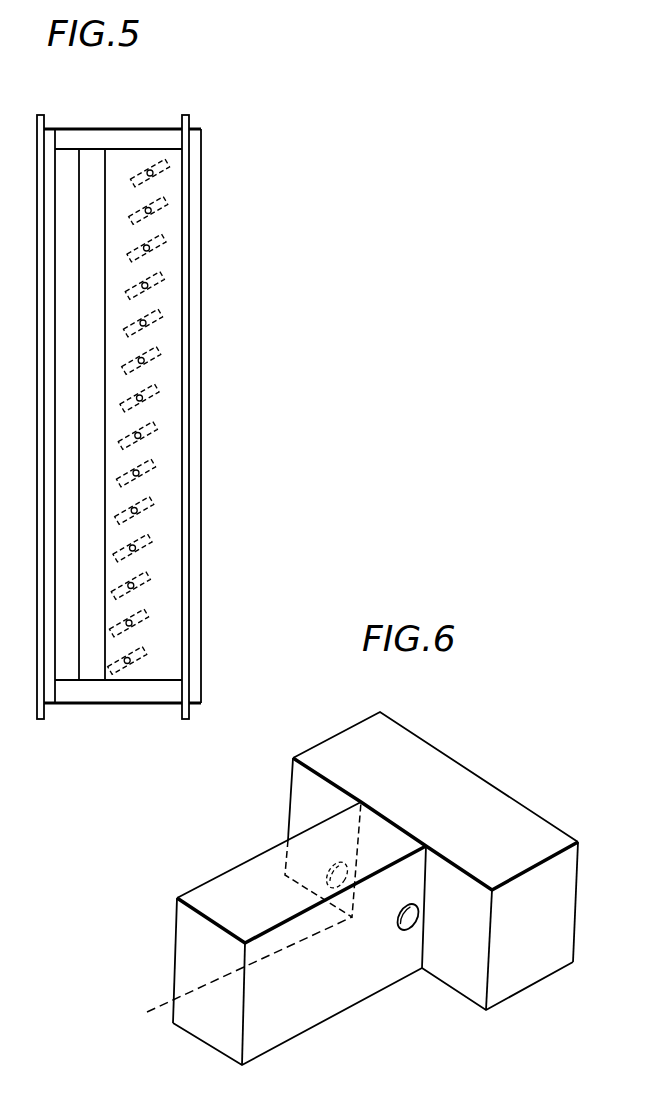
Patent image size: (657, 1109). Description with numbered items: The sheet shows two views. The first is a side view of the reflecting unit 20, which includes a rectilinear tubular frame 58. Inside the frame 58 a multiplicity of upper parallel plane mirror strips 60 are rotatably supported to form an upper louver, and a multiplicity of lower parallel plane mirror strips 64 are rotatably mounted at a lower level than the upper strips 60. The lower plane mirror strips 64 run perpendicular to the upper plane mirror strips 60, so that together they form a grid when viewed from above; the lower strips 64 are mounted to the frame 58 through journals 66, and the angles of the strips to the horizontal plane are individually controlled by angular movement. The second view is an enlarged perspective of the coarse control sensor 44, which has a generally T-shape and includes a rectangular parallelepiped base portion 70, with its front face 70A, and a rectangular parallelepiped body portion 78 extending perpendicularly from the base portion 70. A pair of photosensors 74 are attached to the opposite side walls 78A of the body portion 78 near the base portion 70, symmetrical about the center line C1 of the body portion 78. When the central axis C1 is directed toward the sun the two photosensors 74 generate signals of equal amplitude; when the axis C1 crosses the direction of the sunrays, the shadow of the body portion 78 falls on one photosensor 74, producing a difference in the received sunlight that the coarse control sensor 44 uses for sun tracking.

In FIG. 5, the reflecting unit 20 is at (216, 572).
In FIG. 5, the rectilinear tubular frame 58 is at (135, 128).
In FIG. 5, the upper parallel plane mirror strips 60 is at (78, 672).
In FIG. 5, the lower parallel plane mirror strips 64 is at (141, 179).
In FIG. 5, the journals 66 is at (151, 210).
In FIG. 6, the base portion 70 is at (447, 776).
In FIG. 6, the front face of block 70 70A is at (467, 982).
In FIG. 6, the photosensors 74 is at (323, 874).
In FIG. 6, the body portion 78 is at (242, 880).
In FIG. 6, the side walls 78A is at (288, 1020).
In FIG. 6, the coarse control sensor 44 is at (376, 1004).
In FIG. 6, the center line C1 is at (564, 788).